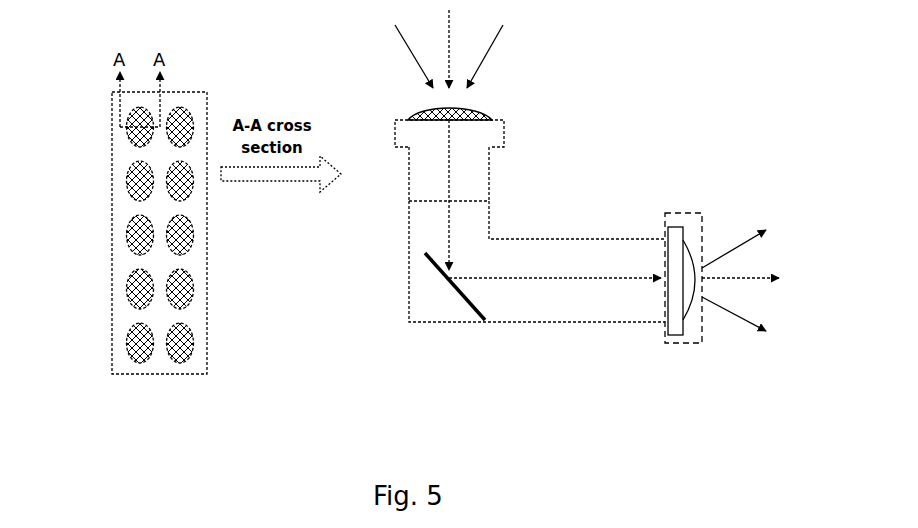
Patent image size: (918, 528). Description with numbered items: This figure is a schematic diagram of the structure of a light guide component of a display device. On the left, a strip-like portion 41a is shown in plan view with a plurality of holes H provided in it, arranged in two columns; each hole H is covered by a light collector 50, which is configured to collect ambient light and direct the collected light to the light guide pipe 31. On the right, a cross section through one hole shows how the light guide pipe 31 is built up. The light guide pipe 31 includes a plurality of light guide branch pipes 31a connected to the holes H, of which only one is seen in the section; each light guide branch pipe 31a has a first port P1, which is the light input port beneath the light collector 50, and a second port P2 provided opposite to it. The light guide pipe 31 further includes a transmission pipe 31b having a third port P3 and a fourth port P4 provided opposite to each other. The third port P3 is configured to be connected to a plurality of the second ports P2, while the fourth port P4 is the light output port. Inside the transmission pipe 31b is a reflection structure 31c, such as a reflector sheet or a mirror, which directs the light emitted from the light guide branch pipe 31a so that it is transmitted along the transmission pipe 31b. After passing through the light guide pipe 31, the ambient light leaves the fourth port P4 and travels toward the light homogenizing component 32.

The strip-like portion 41a is at (127, 213).
The hole H is at (128, 243).
The light collector 50 is at (272, 219).
The light guide pipe 31 is at (537, 234).
The light guide branch pipe 31a is at (465, 183).
The transmission pipe 31b is at (465, 240).
The reflection structure 31c is at (460, 295).
The light homogenizing component 32 is at (693, 343).
The first port P1 is at (437, 121).
The second port P2 is at (437, 201).
The third port P3 is at (423, 202).
The fourth port P4 is at (663, 296).